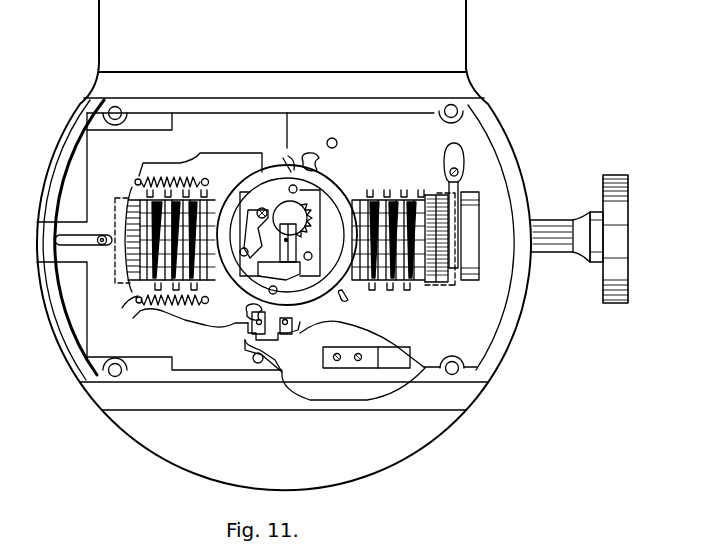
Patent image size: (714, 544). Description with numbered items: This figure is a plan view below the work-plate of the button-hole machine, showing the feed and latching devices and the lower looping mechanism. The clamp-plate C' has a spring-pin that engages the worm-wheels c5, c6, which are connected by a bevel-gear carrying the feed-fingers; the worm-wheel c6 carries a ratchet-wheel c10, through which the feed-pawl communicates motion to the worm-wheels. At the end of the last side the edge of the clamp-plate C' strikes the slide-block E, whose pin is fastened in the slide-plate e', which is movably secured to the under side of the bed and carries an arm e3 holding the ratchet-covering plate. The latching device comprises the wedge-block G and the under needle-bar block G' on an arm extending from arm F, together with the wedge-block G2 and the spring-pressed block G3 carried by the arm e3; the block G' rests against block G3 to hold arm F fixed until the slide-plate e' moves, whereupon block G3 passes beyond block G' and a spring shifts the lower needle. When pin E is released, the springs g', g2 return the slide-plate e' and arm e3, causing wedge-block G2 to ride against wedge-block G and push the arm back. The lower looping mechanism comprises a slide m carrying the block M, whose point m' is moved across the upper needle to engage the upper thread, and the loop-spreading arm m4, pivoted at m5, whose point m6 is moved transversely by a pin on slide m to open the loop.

The slide-block E is at (100, 246).
The spring g' is at (198, 170).
The pivot m5 is at (246, 180).
The clamp-plate C' is at (280, 203).
The loop-spreading arm m4 is at (310, 197).
The slide m is at (246, 233).
The spreading-point m6 is at (313, 243).
The point m' is at (279, 271).
The worm-wheel c6 is at (392, 206).
The ratchet-wheel c10 is at (438, 282).
The worm-wheel c5 is at (136, 300).
The spring g2 is at (190, 308).
The slide-plate e' is at (109, 330).
The under needle-bar block G' is at (247, 335).
The wedge-block G is at (335, 352).
The arm e3 is at (366, 370).
The wedge-block G2 is at (300, 342).
The block M is at (250, 340).
The block G3 is at (249, 350).